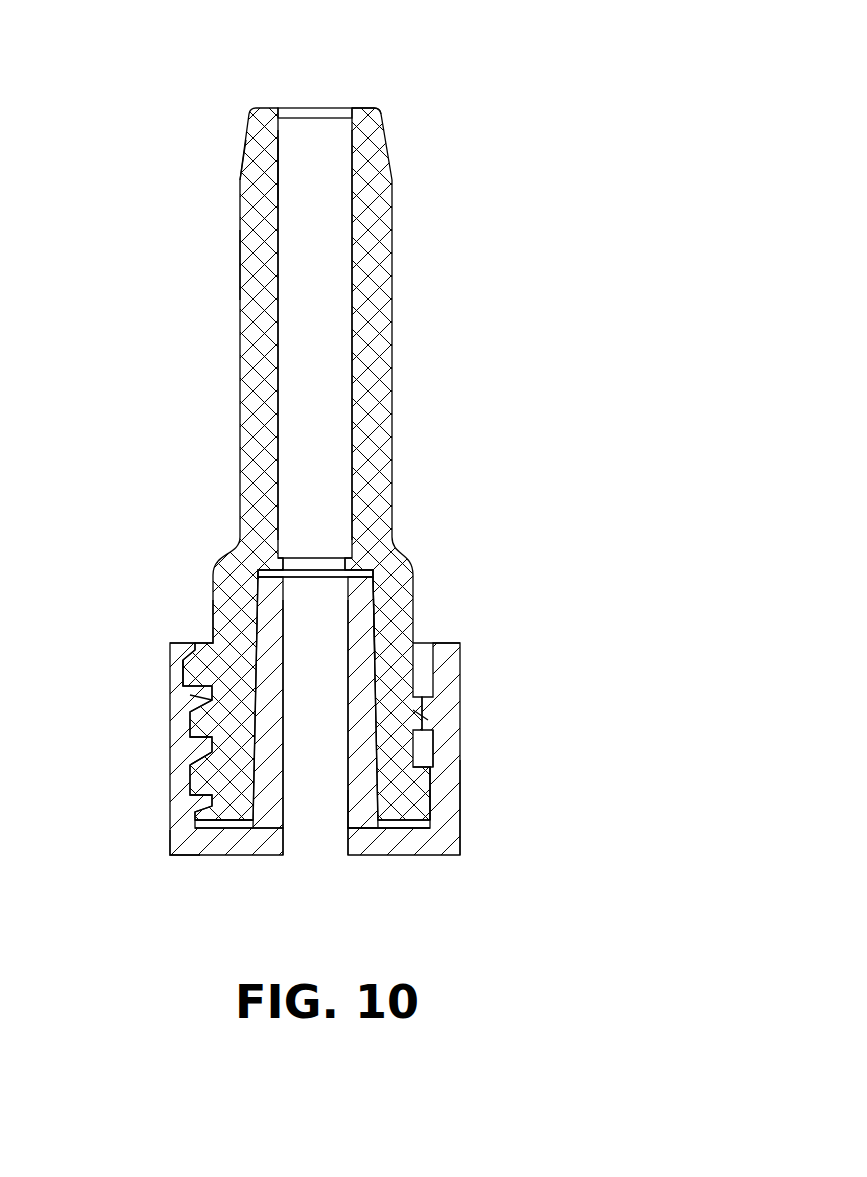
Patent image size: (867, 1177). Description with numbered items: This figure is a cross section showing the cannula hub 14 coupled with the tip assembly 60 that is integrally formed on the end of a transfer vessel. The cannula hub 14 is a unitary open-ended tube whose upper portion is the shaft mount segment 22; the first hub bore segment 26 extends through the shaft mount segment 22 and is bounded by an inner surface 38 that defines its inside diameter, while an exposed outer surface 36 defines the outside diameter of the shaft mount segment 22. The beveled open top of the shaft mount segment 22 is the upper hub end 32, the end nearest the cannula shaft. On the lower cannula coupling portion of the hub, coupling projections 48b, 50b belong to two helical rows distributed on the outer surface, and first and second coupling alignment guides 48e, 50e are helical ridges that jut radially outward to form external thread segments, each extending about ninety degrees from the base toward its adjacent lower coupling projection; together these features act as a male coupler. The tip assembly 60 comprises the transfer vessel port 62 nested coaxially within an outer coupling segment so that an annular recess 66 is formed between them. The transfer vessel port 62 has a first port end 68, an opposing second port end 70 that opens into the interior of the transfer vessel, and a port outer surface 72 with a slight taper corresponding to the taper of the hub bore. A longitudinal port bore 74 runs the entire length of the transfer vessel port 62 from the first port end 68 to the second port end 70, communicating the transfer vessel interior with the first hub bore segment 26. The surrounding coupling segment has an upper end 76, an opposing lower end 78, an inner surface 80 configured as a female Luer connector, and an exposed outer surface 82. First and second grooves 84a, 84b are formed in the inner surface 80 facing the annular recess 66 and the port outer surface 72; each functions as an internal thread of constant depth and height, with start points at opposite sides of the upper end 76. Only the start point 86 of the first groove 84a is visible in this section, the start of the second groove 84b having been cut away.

The cannula hub 14 is at (392, 205).
The shaft mount segment 22 is at (241, 196).
The first hub bore segment 26 is at (322, 140).
The upper hub end 32 is at (378, 108).
The outer surface 36 is at (240, 258).
The inner surface 38 is at (280, 162).
The coupling projection 48b is at (183, 675).
The first coupling alignment guide 48e is at (197, 803).
The coupling projection 50b is at (190, 750).
The second coupling alignment guide 50e is at (423, 817).
The tip assembly 60 is at (240, 855).
The transfer vessel port 62 is at (362, 602).
The annular recess 66 is at (428, 652).
The first port end 68 is at (362, 572).
The second port end 70 is at (365, 822).
The port outer surface 72 is at (375, 626).
The longitudinal port bore 74 is at (317, 815).
The upper end 76 is at (180, 643).
The lower end 78 is at (183, 855).
The inner surface 80 is at (435, 743).
The outer surface 82 is at (462, 800).
The first groove 84a is at (210, 700).
The second groove 84b is at (208, 767).
The start point 86 is at (210, 643).